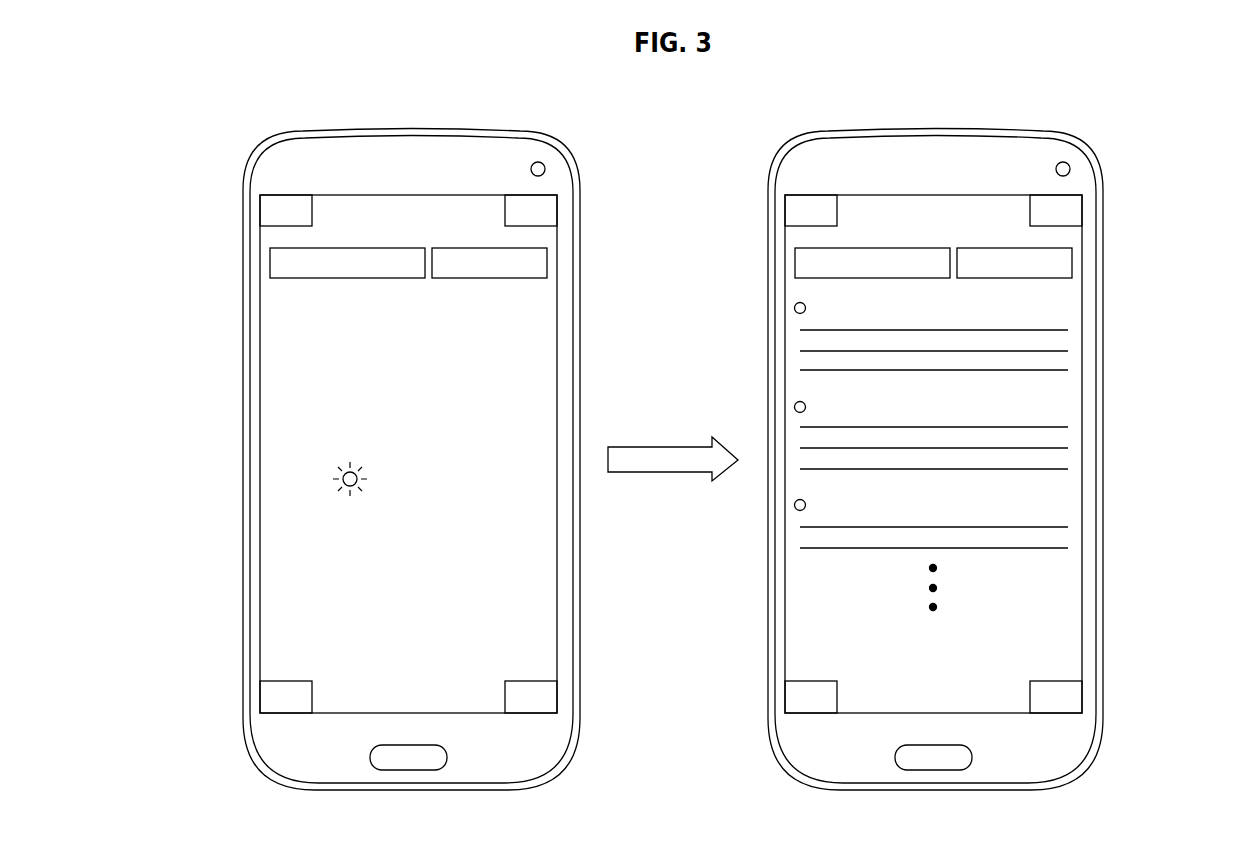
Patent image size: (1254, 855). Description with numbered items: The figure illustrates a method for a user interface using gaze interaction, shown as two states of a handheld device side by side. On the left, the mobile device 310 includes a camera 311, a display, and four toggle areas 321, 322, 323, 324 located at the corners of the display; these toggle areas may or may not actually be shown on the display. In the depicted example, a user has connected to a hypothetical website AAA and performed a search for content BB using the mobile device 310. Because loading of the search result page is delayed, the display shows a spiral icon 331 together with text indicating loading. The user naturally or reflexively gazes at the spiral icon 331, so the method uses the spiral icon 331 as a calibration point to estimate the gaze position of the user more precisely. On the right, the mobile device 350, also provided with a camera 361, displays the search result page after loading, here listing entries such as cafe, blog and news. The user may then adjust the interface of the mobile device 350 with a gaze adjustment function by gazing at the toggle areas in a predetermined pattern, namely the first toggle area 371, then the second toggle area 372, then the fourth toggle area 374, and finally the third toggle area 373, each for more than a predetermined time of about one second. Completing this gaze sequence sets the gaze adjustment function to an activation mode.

The mobile device 310 is at (413, 130).
The camera 311 is at (546, 165).
The first toggle area 321 is at (285, 215).
The second toggle area 322 is at (533, 215).
The third toggle area 323 is at (285, 700).
The fourth toggle area 324 is at (533, 700).
The spiral icon 331 is at (352, 456).
The mobile device 350 is at (938, 130).
The camera 361 is at (1071, 165).
The first toggle area 371 is at (810, 215).
The second toggle area 372 is at (1058, 215).
The third toggle area 373 is at (810, 700).
The fourth toggle area 374 is at (1058, 700).